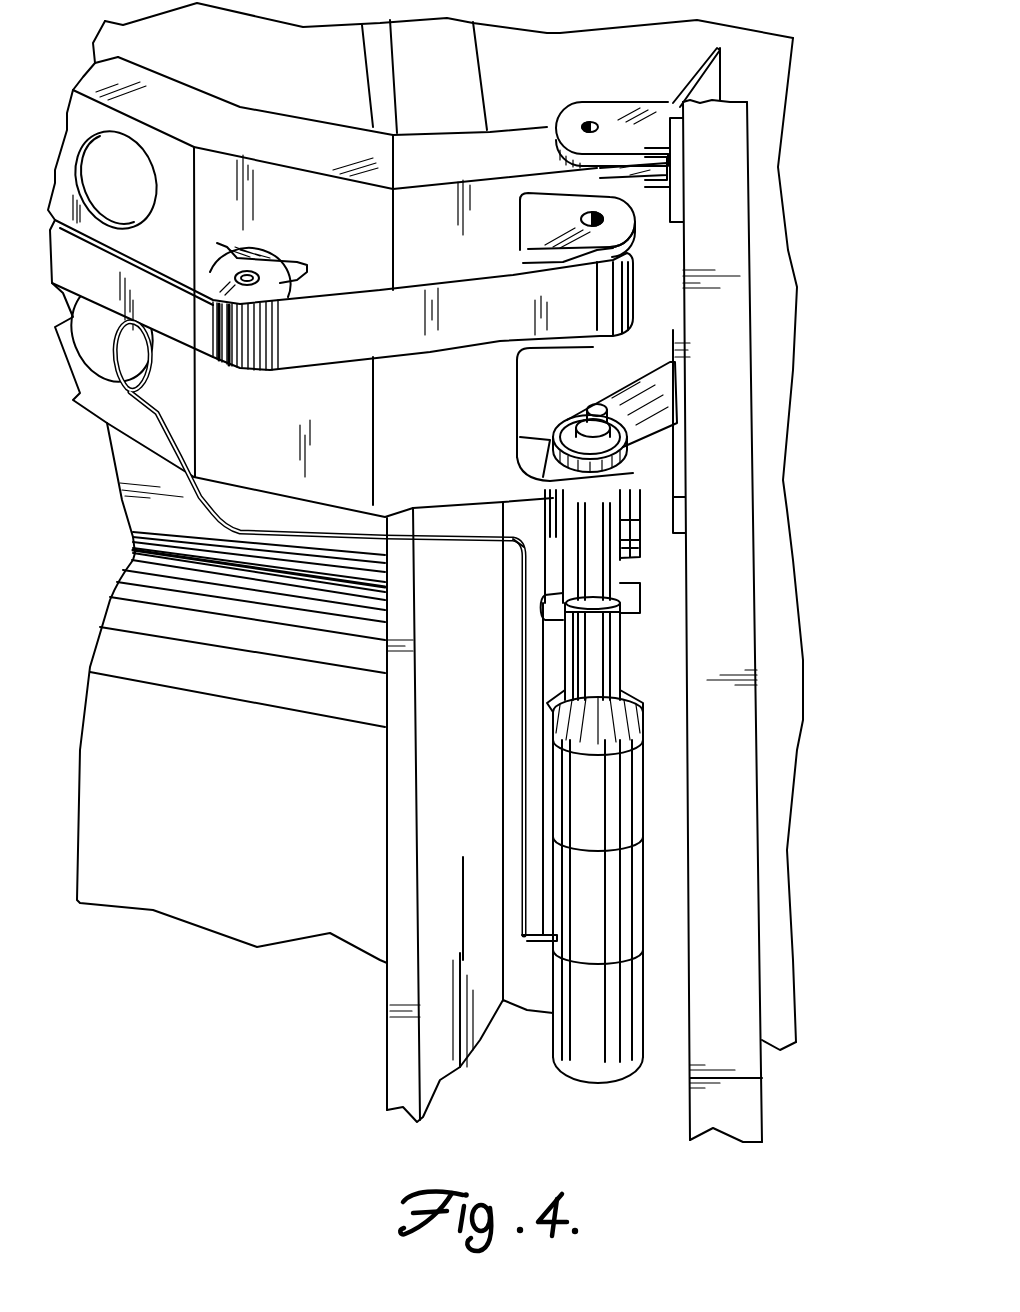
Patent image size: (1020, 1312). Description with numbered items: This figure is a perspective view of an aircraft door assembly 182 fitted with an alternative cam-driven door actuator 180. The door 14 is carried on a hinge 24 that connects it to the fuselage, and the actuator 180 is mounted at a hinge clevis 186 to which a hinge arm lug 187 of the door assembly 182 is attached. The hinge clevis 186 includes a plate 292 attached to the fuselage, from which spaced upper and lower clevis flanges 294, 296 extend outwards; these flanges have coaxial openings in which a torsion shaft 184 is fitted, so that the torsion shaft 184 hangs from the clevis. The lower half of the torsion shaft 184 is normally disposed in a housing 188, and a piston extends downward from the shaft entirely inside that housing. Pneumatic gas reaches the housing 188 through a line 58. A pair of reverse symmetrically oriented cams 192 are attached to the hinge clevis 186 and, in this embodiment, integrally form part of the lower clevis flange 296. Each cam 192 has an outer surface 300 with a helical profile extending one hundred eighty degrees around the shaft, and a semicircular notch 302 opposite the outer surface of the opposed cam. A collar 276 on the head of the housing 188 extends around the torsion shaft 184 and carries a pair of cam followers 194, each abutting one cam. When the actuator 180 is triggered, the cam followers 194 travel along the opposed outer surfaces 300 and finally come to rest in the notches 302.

The door 14 is at (290, 83).
The hinge 24 is at (438, 431).
The line 58 is at (187, 481).
The aircraft door assembly 182 is at (760, 183).
The hinge clevis 186 is at (660, 330).
The hinge arm lug 187 is at (540, 437).
The plate 292 is at (655, 365).
The upper clevis flange 294 is at (665, 400).
The lower clevis flange 296 is at (647, 477).
The cams 192 is at (640, 533).
The outer surface 300 is at (630, 570).
The torsion shaft 184 is at (633, 595).
The cam followers 194 is at (545, 660).
The collar 276 is at (613, 660).
The door actuator 180 is at (597, 680).
The housing 188 is at (617, 777).
The semicircular notch 302 is at (525, 585).